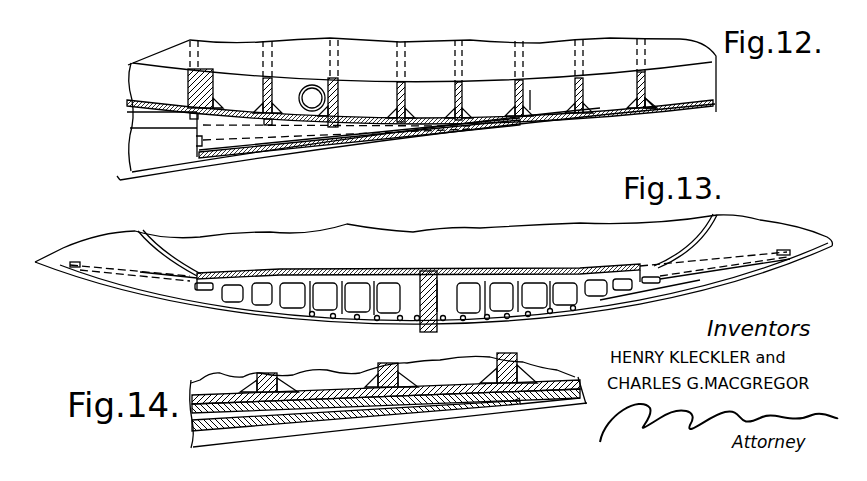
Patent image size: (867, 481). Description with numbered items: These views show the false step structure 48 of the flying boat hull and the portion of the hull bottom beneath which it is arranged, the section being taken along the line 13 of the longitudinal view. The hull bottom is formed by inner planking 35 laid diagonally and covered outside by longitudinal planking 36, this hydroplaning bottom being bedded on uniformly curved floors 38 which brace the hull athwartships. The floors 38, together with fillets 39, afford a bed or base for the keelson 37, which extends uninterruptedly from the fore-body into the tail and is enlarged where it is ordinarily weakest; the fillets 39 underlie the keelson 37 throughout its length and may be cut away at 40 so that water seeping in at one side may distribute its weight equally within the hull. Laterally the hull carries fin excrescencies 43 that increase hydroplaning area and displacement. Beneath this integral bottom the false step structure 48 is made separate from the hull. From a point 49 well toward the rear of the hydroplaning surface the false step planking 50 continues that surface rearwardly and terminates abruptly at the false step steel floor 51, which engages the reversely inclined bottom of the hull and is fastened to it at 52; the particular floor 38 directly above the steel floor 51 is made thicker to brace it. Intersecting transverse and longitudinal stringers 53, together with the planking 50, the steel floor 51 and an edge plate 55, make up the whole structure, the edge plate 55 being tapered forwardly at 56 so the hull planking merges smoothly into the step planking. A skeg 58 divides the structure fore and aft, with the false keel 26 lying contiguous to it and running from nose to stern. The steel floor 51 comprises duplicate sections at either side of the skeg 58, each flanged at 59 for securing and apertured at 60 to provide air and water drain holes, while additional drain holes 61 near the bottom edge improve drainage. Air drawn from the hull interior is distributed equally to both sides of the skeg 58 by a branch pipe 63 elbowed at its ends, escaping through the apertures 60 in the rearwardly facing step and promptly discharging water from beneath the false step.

In FIG. 12, the section line 13 is at (183, 192).
In FIG. 12, the false keel 26 is at (462, 132).
In FIG. 14, the false keel 26 is at (397, 418).
In FIG. 14, the planking 35 is at (200, 394).
In FIG. 14, the longitudinal planking 36 is at (233, 394).
In FIG. 12, the keelson 37 is at (617, 43).
In FIG. 12, the floors 38 is at (203, 80).
In FIG. 14, the floors 38 is at (400, 378).
In FIG. 12, the fillets 39 is at (552, 93).
In FIG. 14, the fillets 39 is at (553, 373).
In FIG. 12, the cut-away portion of fillets 40 is at (648, 101).
In FIG. 13, the fin excrescencies 43 is at (778, 259).
In FIG. 12, the false step structure 48 is at (225, 160).
In FIG. 12, the point 49 is at (577, 121).
In FIG. 14, the point 49 is at (513, 404).
In FIG. 12, the false step planking 50 is at (357, 138).
In FIG. 13, the false step planking 50 is at (627, 296).
In FIG. 14, the false step planking 50 is at (318, 421).
In FIG. 12, the false step steel floor 51 is at (193, 128).
In FIG. 13, the false step steel floor 51 is at (483, 292).
In FIG. 12, the fastening means 52 is at (192, 114).
In FIG. 13, the fastening means 52 is at (414, 271).
In FIG. 13, the stringers 53 is at (525, 317).
In FIG. 14, the edge plate 55 is at (448, 403).
In FIG. 14, the forward taper 56 is at (516, 398).
In FIG. 13, the skeg 58 is at (440, 284).
In FIG. 13, the flange 59 is at (375, 271).
In FIG. 13, the apertures 60 is at (297, 302).
In FIG. 13, the drain holes 61 is at (375, 316).
In FIG. 12, the branch pipe 63 is at (310, 78).